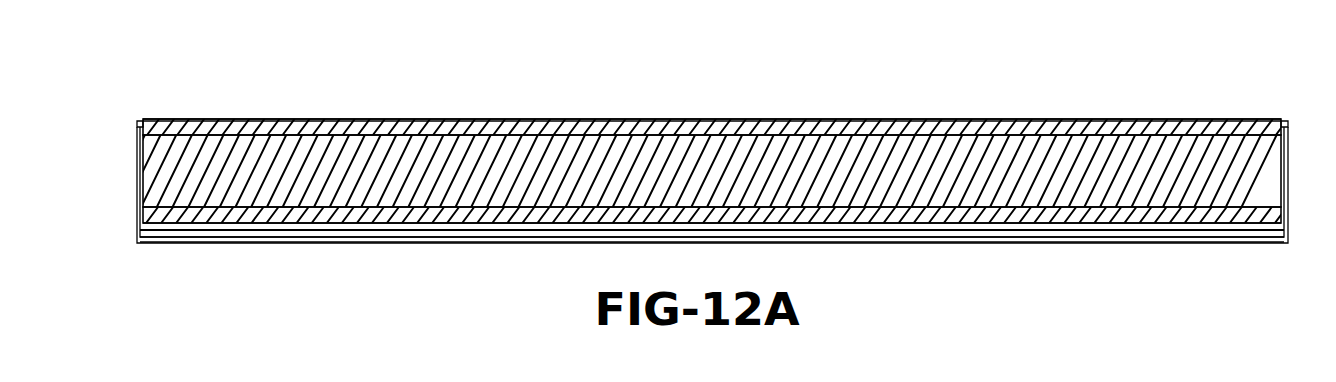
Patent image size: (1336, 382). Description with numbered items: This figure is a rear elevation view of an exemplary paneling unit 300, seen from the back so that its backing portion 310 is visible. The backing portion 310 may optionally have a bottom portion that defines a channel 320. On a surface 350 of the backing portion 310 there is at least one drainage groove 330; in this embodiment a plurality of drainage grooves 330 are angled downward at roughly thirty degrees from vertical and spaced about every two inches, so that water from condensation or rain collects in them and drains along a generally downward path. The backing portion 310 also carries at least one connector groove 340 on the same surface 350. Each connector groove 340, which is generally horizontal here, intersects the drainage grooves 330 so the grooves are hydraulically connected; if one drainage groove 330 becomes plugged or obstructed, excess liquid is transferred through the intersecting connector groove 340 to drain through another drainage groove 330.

The paneling unit 300 is at (126, 115).
The backing portion 310 is at (977, 118).
The channel 320 is at (1010, 228).
The drainage groove 330 is at (620, 128).
The connector groove 340 is at (278, 132).
The surface 350 is at (402, 172).